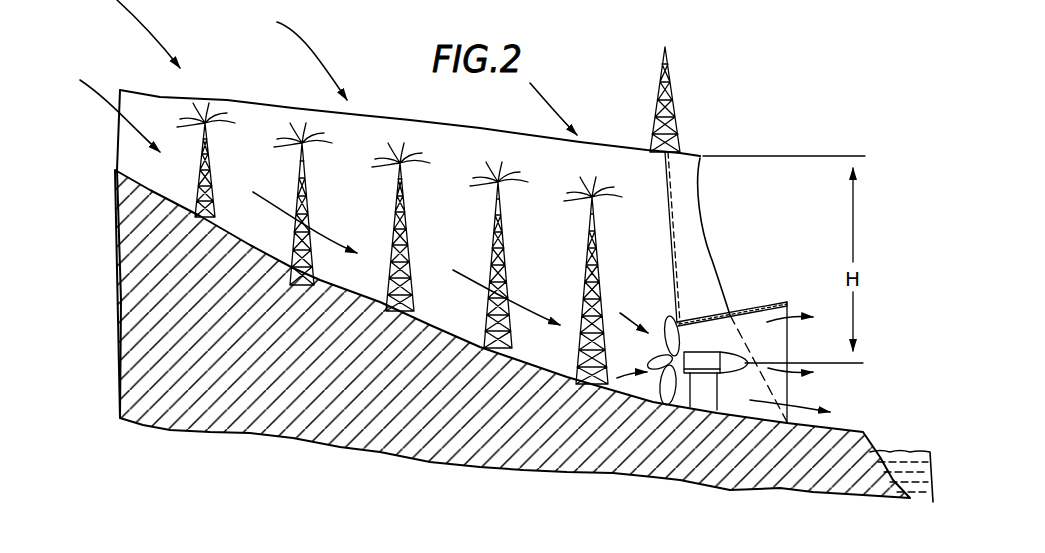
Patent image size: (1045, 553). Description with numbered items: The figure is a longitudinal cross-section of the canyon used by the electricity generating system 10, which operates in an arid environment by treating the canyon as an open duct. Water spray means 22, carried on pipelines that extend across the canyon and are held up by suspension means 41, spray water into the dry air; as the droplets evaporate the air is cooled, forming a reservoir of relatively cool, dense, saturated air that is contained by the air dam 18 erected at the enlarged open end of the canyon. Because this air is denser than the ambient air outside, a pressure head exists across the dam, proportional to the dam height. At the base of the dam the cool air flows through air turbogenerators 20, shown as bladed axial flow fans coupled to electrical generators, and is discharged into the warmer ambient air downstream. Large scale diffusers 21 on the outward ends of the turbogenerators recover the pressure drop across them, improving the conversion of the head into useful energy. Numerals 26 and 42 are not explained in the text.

The system for generating electricity 10 is at (712, 105).
The air dam 18 is at (672, 203).
The air turbogenerators 20 is at (706, 352).
The diffusers 21 is at (775, 300).
The water spray means 22 is at (223, 117).
The measuring mast 26 is at (670, 63).
The suspension means 41 is at (582, 287).
The tower aerial 42 is at (598, 248).